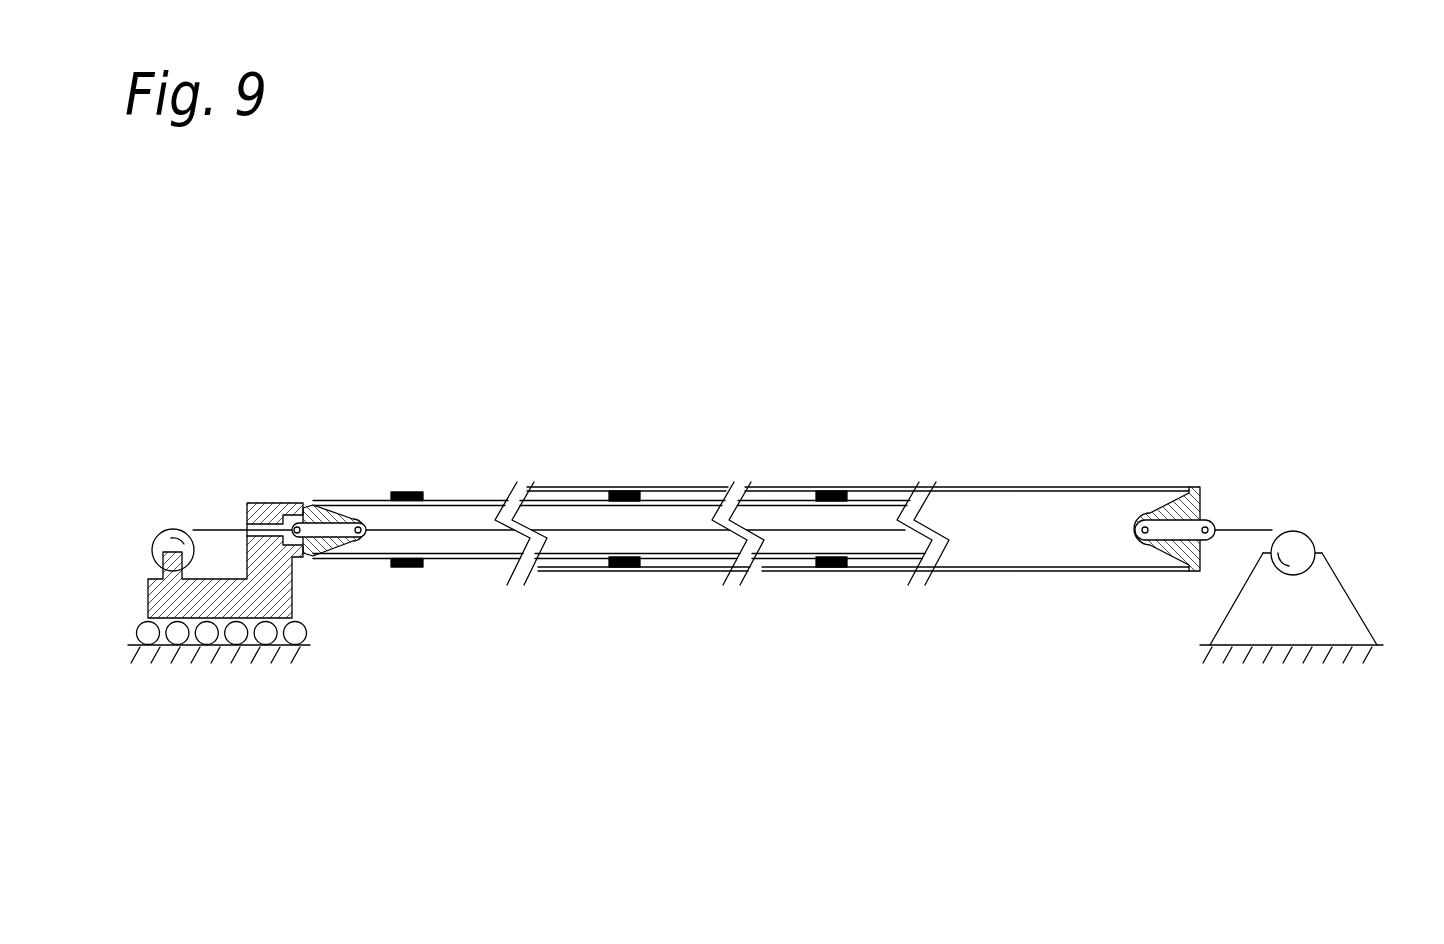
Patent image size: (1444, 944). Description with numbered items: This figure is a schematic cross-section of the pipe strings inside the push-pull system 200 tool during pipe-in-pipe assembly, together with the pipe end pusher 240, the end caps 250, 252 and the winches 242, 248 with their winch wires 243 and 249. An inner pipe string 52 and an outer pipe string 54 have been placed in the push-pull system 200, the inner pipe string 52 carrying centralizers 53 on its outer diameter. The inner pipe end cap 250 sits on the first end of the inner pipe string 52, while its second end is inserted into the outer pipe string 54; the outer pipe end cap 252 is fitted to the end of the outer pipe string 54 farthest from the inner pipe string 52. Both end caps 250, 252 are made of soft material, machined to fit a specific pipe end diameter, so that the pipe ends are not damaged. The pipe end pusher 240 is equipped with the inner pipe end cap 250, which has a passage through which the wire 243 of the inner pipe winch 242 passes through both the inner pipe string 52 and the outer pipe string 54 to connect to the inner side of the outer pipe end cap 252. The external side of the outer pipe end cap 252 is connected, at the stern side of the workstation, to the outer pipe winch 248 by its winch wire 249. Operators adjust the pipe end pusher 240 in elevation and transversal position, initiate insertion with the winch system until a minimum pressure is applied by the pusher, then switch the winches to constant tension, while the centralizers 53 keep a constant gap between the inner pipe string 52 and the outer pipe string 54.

The push-pull system 200 is at (362, 410).
The inner pipe string 52 is at (471, 500).
The centralizers 53 is at (402, 492).
The outer pipe string 54 is at (793, 487).
The pipe end pusher 240 is at (207, 605).
The inner pipe winch 242 is at (155, 547).
The wire 243 is at (207, 530).
The outer pipe winch 248 is at (1305, 552).
The winch wire 249 is at (1250, 530).
The inner pipe end cap 250 is at (313, 517).
The outer pipe end cap 252 is at (1187, 510).